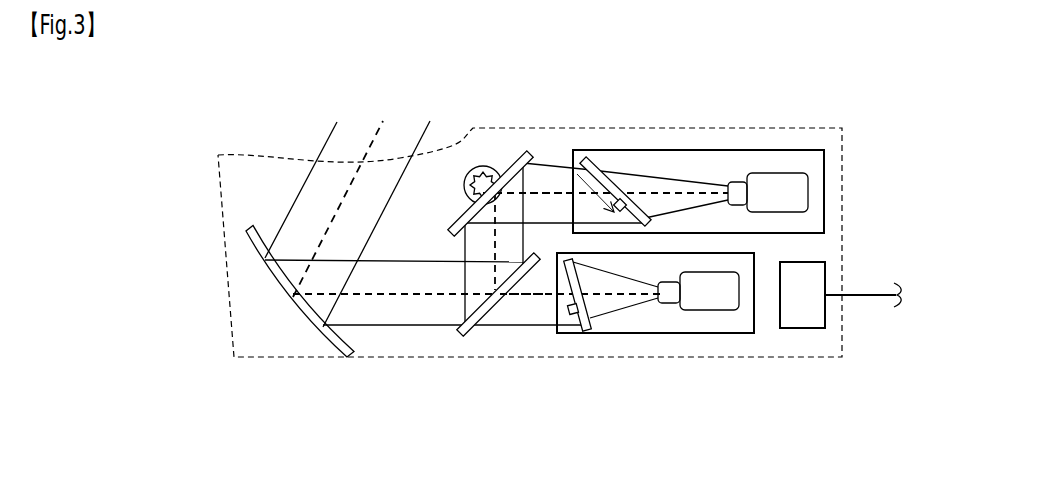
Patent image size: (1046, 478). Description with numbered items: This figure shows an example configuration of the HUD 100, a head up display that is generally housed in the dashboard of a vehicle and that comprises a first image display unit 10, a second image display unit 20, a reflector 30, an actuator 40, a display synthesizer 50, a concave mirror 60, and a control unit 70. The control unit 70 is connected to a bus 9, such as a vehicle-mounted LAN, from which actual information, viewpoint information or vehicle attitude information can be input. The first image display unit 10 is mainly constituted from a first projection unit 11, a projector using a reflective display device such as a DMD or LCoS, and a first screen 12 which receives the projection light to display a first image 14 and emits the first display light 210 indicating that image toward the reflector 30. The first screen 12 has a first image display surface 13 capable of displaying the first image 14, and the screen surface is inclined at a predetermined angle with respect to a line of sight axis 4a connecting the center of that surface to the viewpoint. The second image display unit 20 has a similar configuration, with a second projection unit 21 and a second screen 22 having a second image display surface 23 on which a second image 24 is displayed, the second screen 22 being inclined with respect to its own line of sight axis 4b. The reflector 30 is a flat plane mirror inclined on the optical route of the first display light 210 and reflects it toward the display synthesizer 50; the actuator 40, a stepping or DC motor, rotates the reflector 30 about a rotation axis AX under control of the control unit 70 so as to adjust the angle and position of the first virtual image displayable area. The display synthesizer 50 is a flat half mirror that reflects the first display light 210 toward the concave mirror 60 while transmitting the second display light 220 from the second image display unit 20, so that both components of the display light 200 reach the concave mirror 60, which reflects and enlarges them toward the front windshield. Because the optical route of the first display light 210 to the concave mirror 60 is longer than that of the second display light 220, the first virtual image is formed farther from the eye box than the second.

The HUD 100 is at (845, 126).
The display light 200 is at (320, 130).
The first display light 210 is at (548, 163).
The second display light 220 is at (518, 329).
The rotation axis AX is at (490, 188).
The actuator 40 is at (474, 168).
The reflector 30 is at (519, 150).
The display synthesizer 50 is at (468, 338).
The concave mirror 60 is at (330, 341).
The line of sight axis 4a is at (561, 185).
The line of sight axis 4b is at (529, 294).
The first image display unit 10 is at (828, 212).
The first projection unit 11 is at (772, 173).
The first screen 12 is at (601, 166).
The first image display surface 13 is at (621, 204).
The first image 14 is at (651, 218).
The second image display unit 20 is at (757, 317).
The second projection unit 21 is at (708, 311).
The second screen 22 is at (585, 322).
The second image display surface 23 is at (568, 309).
The second image 24 is at (595, 318).
The control unit 70 is at (826, 318).
The bus 9 is at (859, 295).